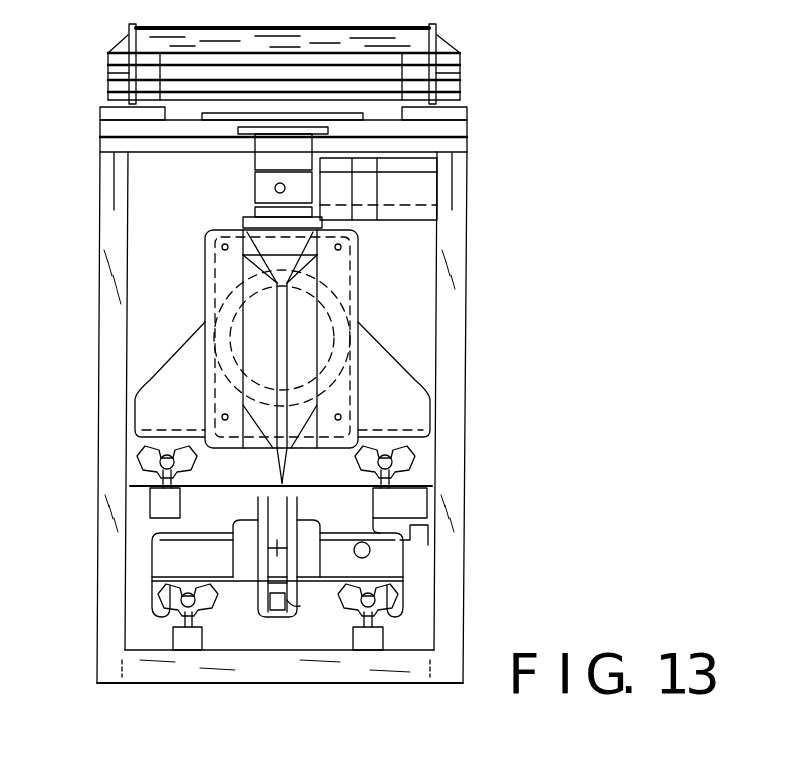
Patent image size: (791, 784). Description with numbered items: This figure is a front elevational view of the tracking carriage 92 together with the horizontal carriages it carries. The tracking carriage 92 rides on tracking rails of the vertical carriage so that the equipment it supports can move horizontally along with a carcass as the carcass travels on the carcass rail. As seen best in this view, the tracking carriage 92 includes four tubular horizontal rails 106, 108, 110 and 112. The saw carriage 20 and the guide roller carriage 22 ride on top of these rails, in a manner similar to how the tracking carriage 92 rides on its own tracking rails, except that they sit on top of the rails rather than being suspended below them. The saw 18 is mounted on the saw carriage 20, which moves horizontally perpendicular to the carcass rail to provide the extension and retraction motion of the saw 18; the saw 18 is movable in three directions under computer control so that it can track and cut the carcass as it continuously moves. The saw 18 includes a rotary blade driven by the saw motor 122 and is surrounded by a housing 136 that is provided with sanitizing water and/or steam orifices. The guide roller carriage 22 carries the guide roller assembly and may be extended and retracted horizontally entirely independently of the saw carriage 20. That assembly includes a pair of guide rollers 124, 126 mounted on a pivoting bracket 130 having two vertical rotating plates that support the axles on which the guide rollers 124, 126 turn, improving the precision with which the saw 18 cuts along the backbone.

The saw 18 is at (277, 322).
The saw carriage 20 is at (385, 398).
The guide roller carriage 22 is at (388, 557).
The tracking carriage 92 is at (452, 300).
The tubular horizontal rail 106 is at (155, 455).
The tubular horizontal rail 108 is at (170, 596).
The tubular horizontal rail 110 is at (382, 596).
The tubular horizontal rail 112 is at (382, 460).
The saw motor 122 is at (335, 302).
The guide roller 124 is at (267, 520).
The guide roller 126 is at (277, 603).
The pivoting bracket 130 is at (300, 600).
The housing 136 is at (307, 342).